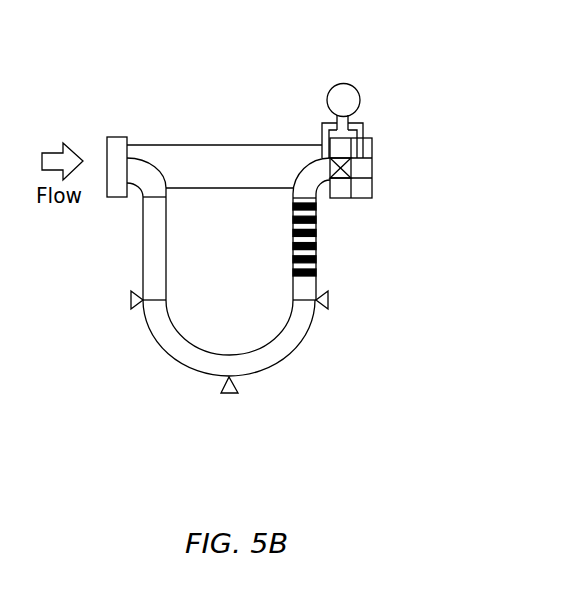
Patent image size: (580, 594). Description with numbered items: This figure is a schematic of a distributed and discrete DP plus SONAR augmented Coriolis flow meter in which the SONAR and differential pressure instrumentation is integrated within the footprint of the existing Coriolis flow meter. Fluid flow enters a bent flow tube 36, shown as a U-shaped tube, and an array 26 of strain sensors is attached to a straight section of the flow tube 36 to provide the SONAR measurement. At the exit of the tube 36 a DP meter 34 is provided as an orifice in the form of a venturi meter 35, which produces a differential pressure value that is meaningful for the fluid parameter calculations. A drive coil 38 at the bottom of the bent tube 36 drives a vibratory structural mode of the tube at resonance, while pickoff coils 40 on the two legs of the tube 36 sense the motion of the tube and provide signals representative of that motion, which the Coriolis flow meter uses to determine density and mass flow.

The array of strain sensors 26 is at (320, 202).
The DP meter 34 is at (344, 83).
The venturi meter 35 is at (372, 167).
The bent flow tubes 36 is at (173, 358).
The drive coil 38 is at (228, 393).
The pickoff coils 40 is at (131, 299).